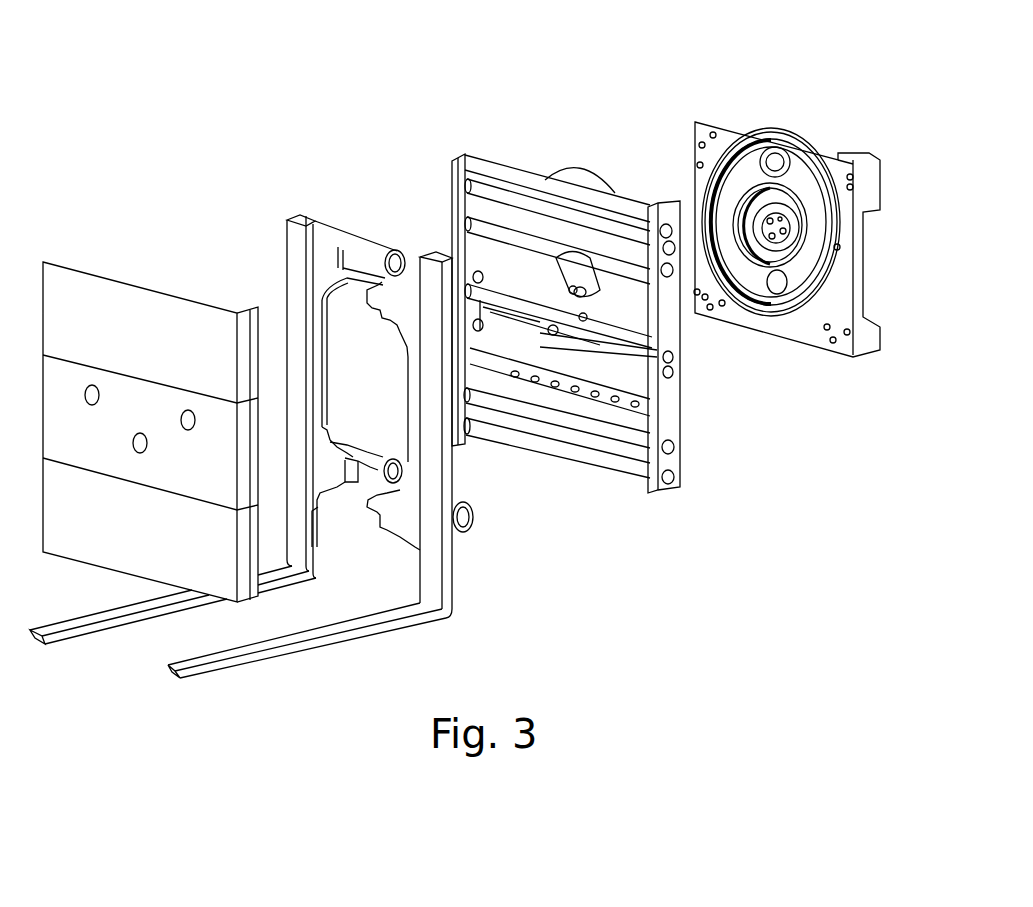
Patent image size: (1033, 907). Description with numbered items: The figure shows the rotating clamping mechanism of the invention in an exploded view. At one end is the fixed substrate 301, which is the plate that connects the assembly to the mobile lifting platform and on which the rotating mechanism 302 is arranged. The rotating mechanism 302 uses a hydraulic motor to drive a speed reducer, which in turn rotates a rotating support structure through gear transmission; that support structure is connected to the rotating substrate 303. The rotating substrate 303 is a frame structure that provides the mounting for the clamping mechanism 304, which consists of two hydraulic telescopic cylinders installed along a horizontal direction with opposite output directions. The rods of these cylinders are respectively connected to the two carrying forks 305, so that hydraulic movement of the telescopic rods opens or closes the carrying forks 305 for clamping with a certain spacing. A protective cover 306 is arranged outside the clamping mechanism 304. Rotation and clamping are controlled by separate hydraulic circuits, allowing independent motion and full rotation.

The fixed substrate 301 is at (830, 178).
The rotating mechanism 302 is at (737, 133).
The rotating substrate 303 is at (610, 200).
The clamping mechanism 304 is at (490, 290).
The carrying forks 305 is at (323, 280).
The protective cover 306 is at (118, 343).